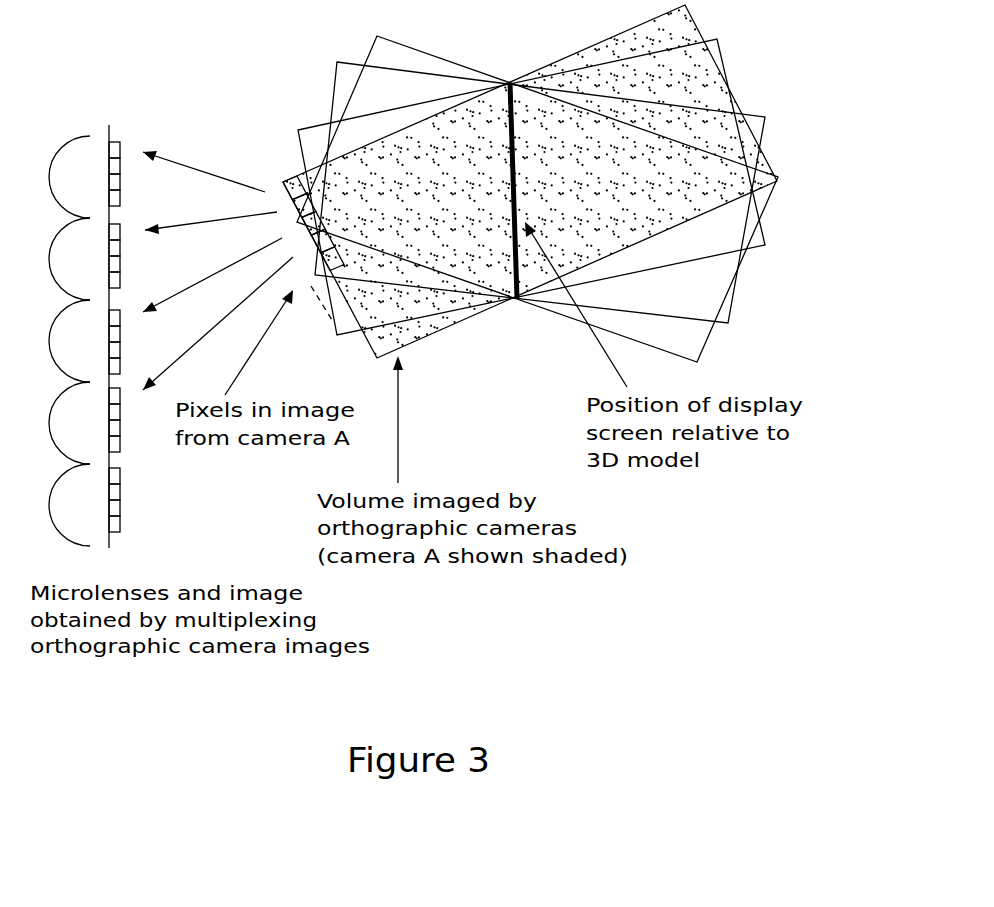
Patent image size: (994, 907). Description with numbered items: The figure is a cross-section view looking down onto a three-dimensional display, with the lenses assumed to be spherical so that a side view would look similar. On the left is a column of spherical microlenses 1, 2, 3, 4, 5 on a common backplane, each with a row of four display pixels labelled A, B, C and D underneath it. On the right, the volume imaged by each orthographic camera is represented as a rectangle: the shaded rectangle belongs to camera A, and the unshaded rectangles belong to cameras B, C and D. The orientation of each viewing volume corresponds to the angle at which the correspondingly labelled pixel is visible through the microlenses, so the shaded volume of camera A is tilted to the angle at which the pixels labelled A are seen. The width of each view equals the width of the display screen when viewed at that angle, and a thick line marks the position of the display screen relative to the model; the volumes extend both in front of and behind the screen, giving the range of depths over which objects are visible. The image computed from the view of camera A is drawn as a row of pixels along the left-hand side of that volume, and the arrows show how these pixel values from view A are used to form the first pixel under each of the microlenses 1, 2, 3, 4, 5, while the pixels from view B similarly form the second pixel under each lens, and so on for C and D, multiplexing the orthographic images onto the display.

The microlens 1 is at (170, 177).
The microlens 2 is at (175, 247).
The microlens 3 is at (180, 296).
The microlens 4 is at (184, 346).
The microlens 5 is at (189, 396).
The orthographic camera A viewing volume A is at (529, 181).
The orthographic camera B viewing volume B is at (528, 187).
The orthographic camera C viewing volume C is at (540, 181).
The orthographic camera D viewing volume D is at (537, 187).